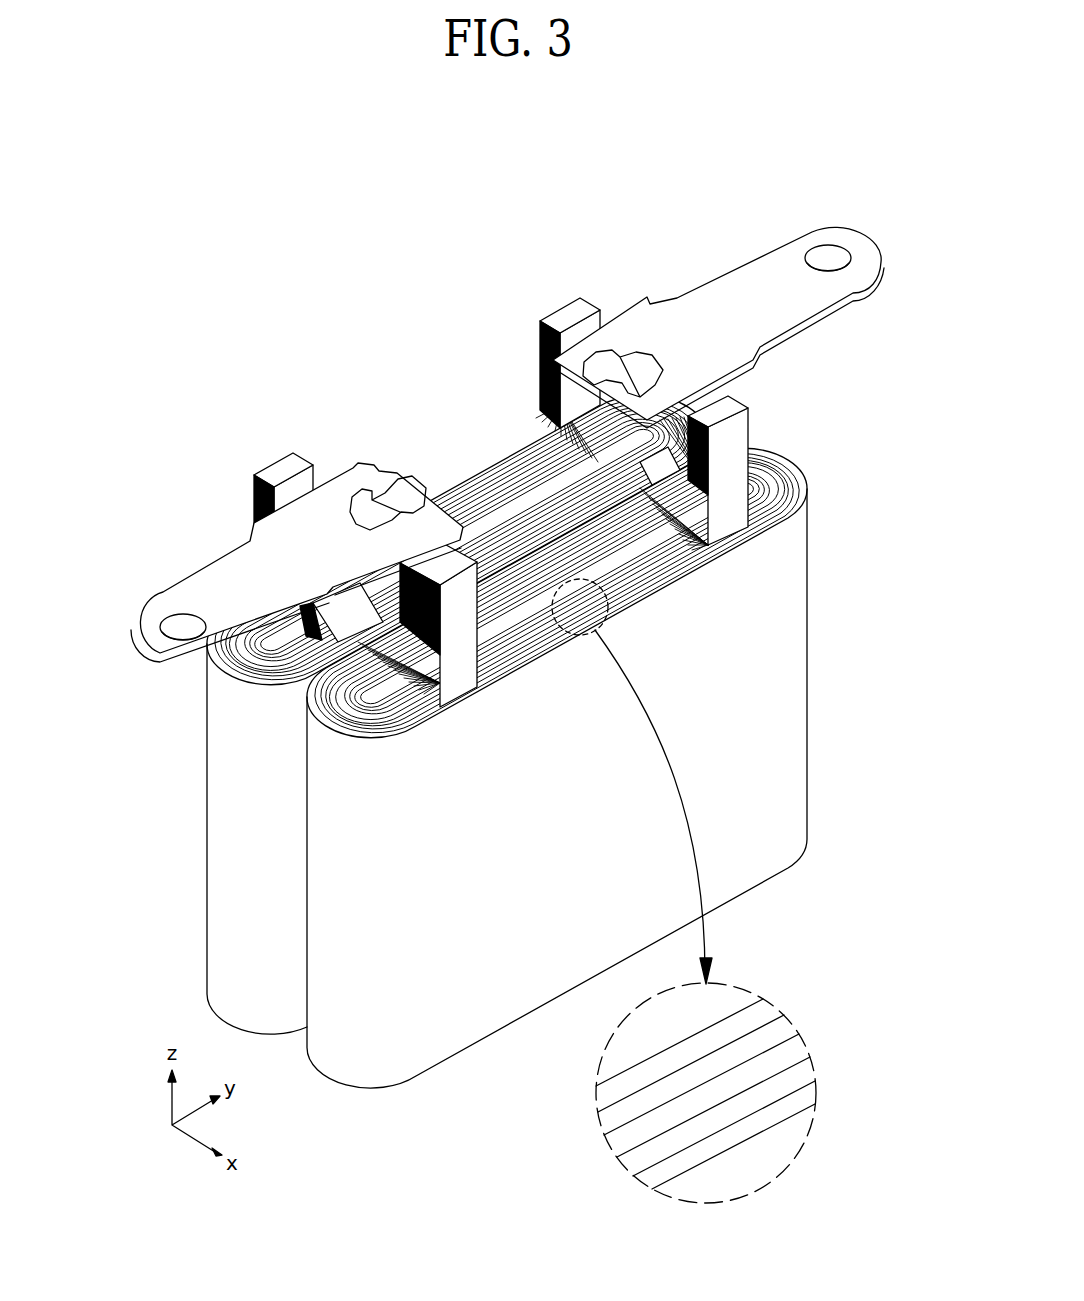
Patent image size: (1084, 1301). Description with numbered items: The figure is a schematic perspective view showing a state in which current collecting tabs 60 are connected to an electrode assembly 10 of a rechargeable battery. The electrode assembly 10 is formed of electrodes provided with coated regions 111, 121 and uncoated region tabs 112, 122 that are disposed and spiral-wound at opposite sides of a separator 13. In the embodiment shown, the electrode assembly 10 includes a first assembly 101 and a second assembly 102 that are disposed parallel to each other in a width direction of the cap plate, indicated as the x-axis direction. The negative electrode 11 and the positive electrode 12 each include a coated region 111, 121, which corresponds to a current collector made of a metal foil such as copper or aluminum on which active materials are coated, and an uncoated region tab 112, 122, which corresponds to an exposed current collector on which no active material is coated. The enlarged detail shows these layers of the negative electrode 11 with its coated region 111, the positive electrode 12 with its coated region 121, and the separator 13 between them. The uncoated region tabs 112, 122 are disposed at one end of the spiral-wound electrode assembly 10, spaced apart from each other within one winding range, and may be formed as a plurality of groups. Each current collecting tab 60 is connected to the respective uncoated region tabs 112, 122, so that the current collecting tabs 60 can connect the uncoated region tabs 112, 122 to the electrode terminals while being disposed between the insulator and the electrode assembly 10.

The electrode assembly 10 is at (452, 741).
The first assembly 101 is at (227, 872).
The second assembly 102 is at (330, 938).
The uncoated region tab 112 is at (294, 480).
The uncoated region tab 122 is at (573, 327).
The current collecting tab 60 is at (711, 276).
The negative electrode 11 is at (727, 1026).
The coated region 111 is at (775, 1025).
The positive electrode 12 is at (760, 1106).
The coated region 121 is at (797, 1065).
The separator 13 is at (757, 1015).